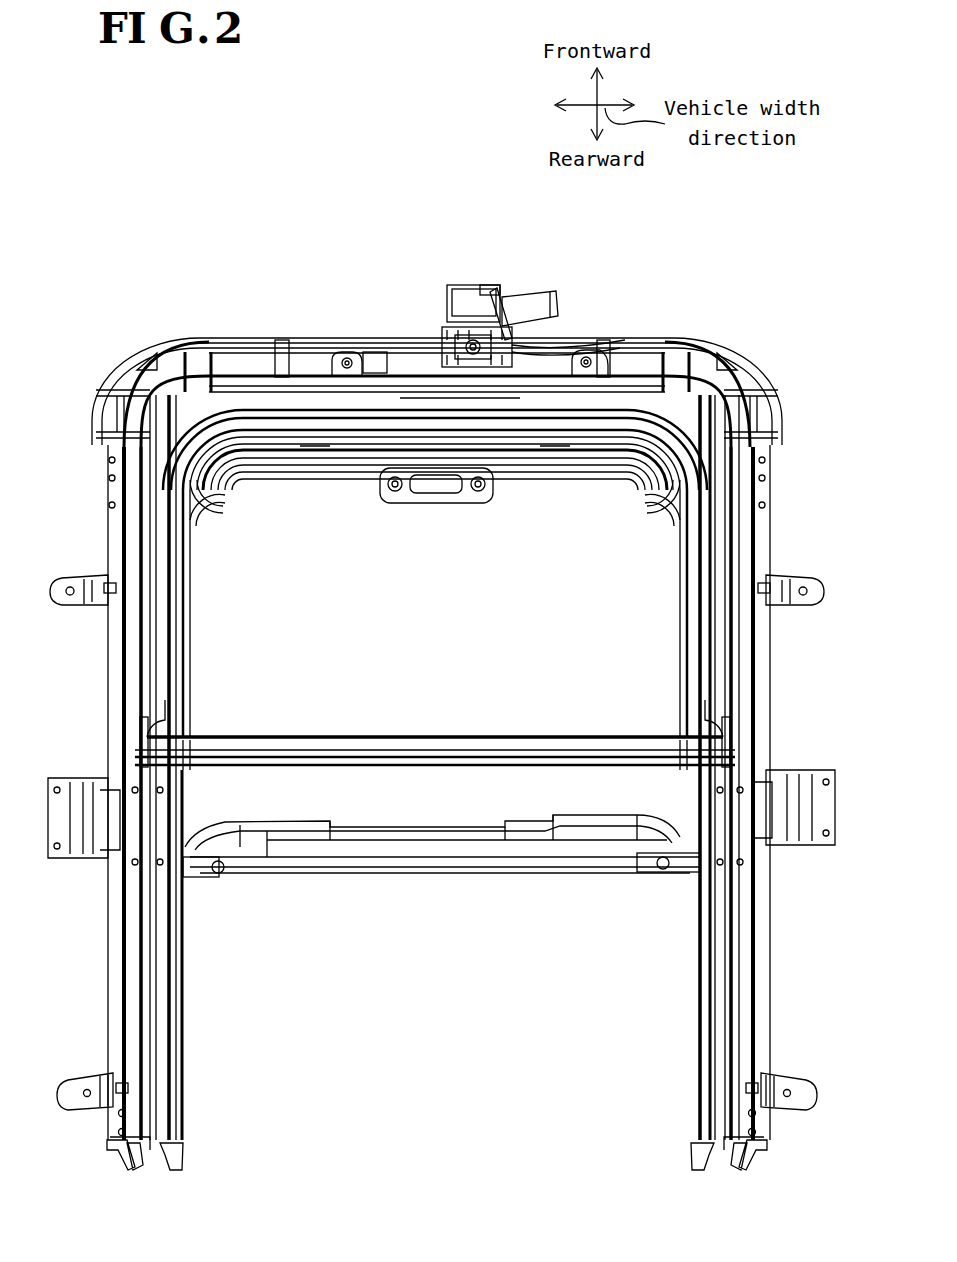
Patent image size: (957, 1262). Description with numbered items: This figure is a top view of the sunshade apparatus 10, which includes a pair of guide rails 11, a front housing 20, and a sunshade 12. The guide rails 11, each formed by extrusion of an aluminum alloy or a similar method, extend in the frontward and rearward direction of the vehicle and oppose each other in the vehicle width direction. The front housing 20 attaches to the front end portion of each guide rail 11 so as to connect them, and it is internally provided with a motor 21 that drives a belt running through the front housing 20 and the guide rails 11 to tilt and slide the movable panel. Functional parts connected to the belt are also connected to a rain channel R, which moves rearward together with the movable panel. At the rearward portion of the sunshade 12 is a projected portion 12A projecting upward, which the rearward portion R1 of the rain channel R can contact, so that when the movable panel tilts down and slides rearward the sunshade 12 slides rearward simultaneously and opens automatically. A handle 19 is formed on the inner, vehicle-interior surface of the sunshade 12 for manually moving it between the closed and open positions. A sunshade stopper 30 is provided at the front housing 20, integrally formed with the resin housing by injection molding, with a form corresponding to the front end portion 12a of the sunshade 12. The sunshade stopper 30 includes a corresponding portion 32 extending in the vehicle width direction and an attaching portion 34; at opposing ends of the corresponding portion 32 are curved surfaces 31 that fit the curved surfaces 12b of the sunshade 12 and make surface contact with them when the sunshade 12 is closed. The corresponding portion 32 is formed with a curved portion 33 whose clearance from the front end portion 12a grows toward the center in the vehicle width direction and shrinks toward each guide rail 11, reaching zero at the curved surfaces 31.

The sunshade apparatus 10 is at (628, 228).
The guide rails 11 is at (140, 543).
The sunshade 12 is at (665, 630).
The front end portion of the sunshade 12a is at (558, 448).
The curved surfaces of the sunshade 12b is at (208, 505).
The projected portion 12A is at (262, 872).
The handle 19 is at (431, 500).
The front housing 20 is at (590, 345).
The motor 21 is at (461, 290).
The sunshade stopper 30 is at (345, 440).
The curved surfaces of the sunshade stopper 31 is at (230, 482).
The corresponding portion 32 is at (618, 495).
The curved portion 33 is at (483, 402).
The attaching portion 34 is at (533, 447).
The rain channel R is at (160, 745).
The rearward portion of the rain channel R1 is at (256, 768).